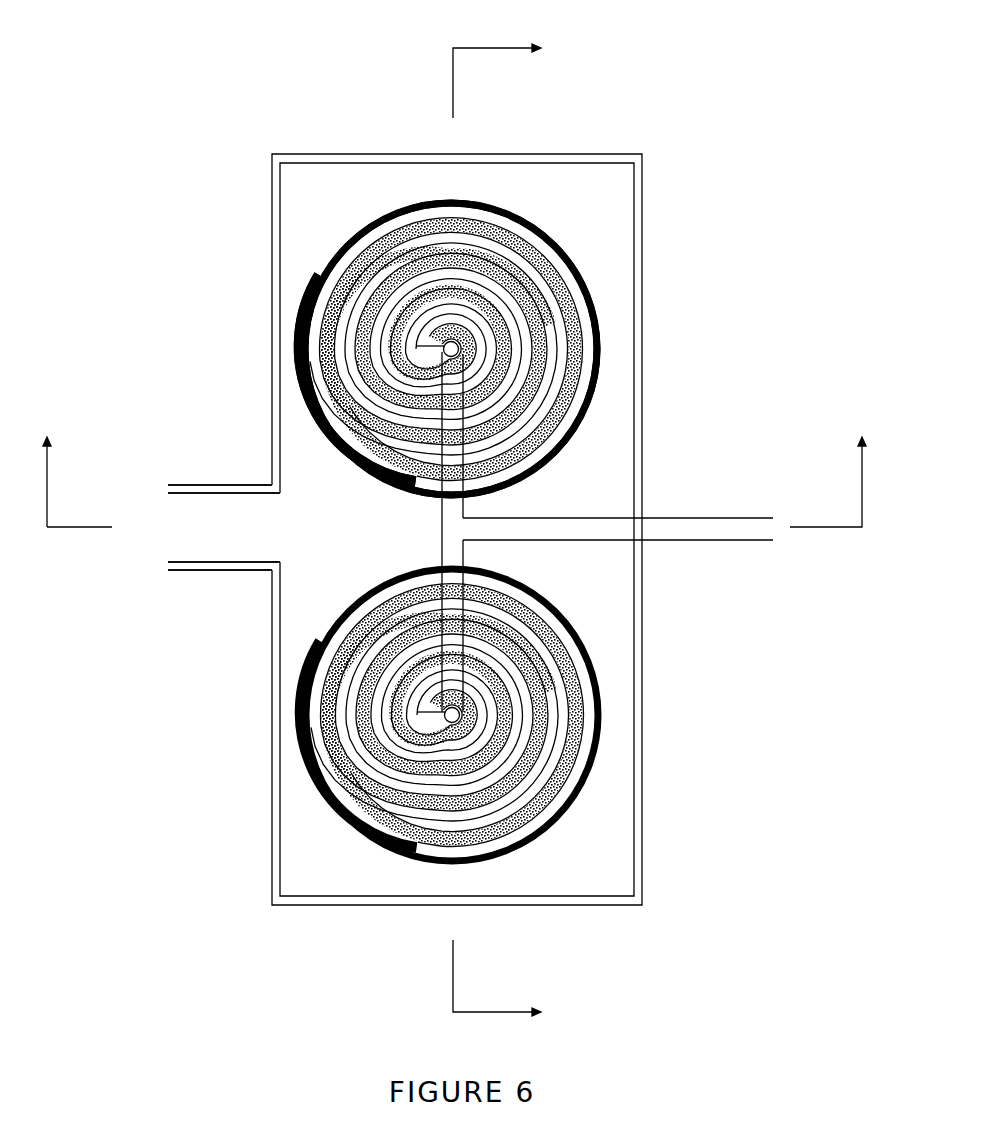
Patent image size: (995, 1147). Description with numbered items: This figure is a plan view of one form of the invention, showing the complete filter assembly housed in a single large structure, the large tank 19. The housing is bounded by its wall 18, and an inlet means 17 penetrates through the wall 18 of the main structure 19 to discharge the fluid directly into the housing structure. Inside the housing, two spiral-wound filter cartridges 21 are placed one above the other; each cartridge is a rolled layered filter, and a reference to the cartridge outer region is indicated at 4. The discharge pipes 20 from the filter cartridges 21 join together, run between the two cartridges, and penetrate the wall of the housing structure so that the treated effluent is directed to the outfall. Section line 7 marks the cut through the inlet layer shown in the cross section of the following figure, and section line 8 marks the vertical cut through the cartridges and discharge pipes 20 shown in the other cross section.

The spiral channel outer wall / outlet 4 is at (337, 436).
The inlet layer 7 is at (458, 467).
The section line 8- 8 is at (503, 513).
The inlet means 17 is at (236, 528).
The wall 18 is at (273, 151).
The large tank 19 is at (311, 868).
The discharge pipes 20 is at (449, 533).
The filter cartridges 21 is at (446, 288).